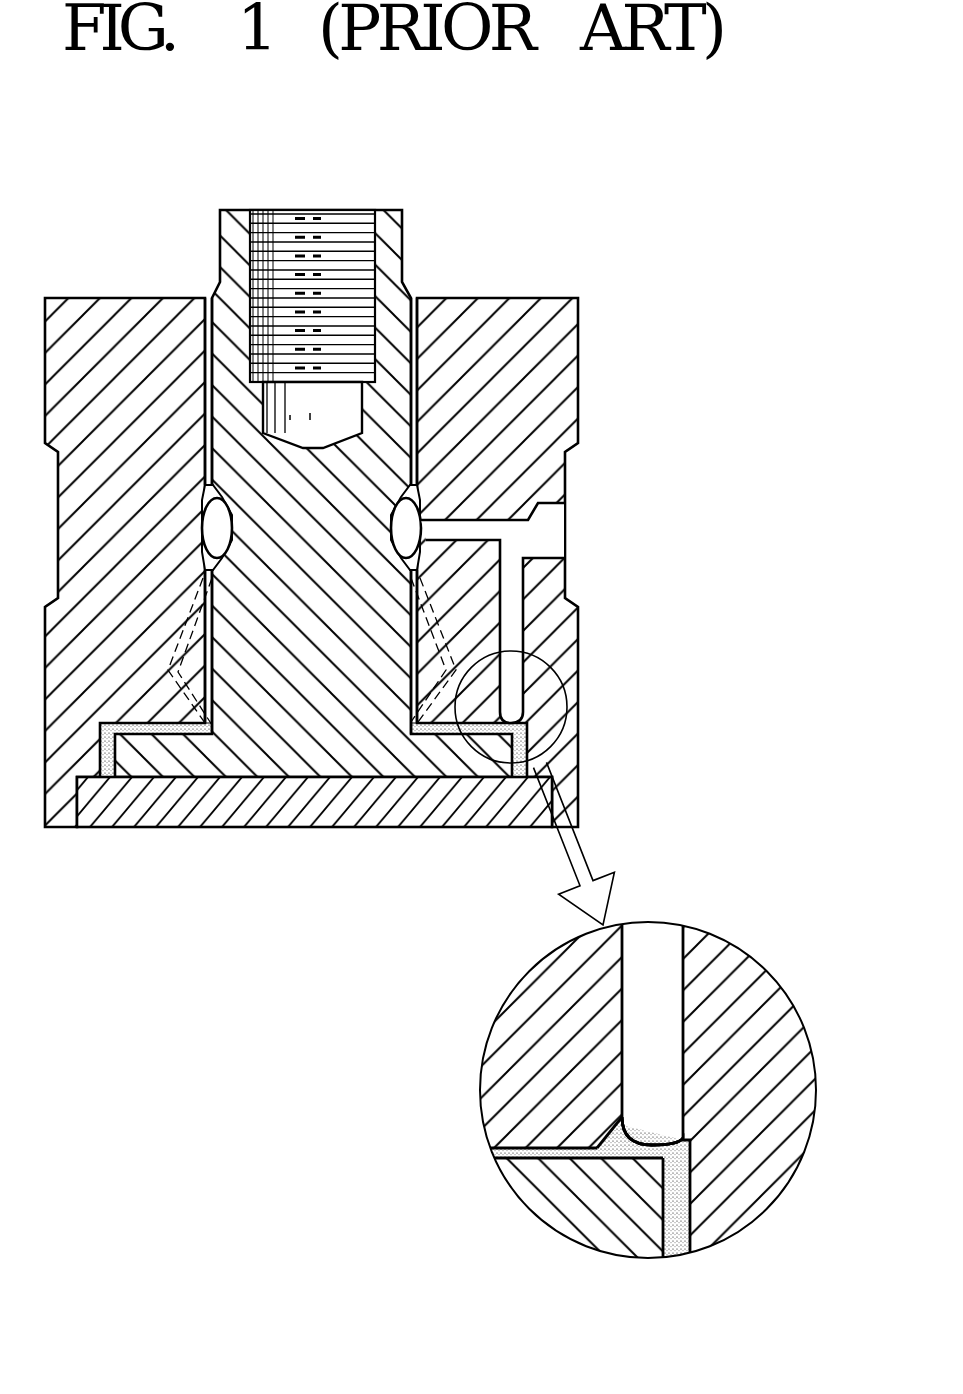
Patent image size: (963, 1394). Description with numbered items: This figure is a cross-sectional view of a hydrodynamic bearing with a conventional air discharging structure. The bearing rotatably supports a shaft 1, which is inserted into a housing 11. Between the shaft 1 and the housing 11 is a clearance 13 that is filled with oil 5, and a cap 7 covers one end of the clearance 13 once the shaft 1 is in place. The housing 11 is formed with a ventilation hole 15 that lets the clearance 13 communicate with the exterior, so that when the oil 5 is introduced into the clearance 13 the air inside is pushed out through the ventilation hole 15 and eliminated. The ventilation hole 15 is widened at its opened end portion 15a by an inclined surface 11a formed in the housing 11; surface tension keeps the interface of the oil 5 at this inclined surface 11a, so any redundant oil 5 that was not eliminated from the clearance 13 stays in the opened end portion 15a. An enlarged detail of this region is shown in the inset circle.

The shaft 1 is at (390, 257).
The housing 11 is at (545, 312).
The clearance 13 is at (413, 322).
The ventilation hole 15 is at (512, 598).
The cap 7 is at (137, 830).
The oil 5 is at (678, 1242).
The inclined surface 11a is at (605, 1150).
The opened end portion 15a is at (637, 1137).